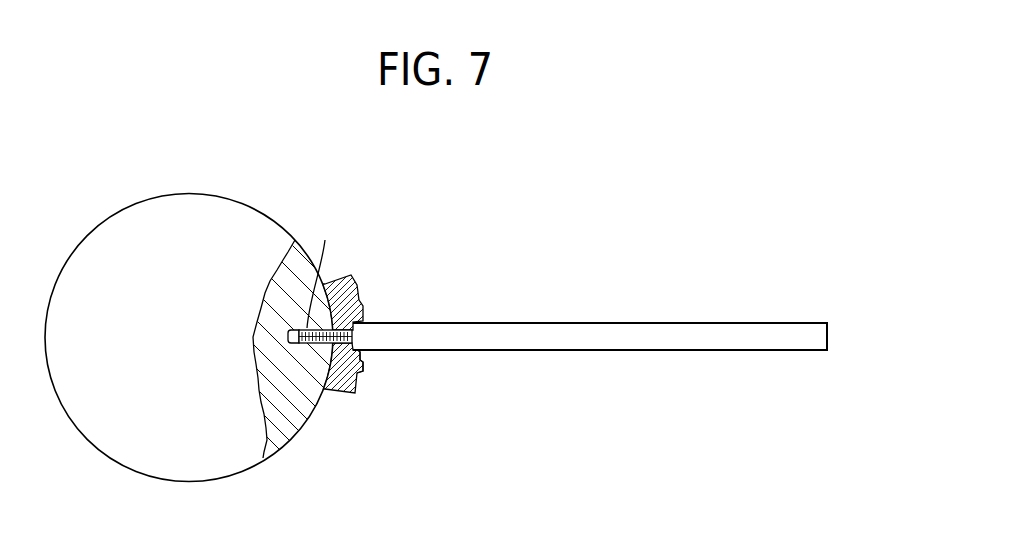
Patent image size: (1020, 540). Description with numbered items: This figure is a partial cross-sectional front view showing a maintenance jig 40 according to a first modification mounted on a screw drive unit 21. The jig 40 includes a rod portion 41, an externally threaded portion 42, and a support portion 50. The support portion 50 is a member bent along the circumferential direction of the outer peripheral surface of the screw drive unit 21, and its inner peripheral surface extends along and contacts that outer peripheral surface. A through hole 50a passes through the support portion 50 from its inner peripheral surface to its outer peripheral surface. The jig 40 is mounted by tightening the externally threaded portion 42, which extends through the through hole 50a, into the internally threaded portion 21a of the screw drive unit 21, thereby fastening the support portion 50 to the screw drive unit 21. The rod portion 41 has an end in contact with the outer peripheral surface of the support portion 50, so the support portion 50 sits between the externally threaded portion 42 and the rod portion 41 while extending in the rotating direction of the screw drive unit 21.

The screw drive unit 21 is at (186, 193).
The internally threaded portion 21a is at (323, 270).
The jig 40 is at (588, 305).
The rod portion 41 is at (515, 323).
The externally threaded portion 42 is at (305, 427).
The support portion 50 is at (360, 291).
The through hole 50a is at (358, 391).